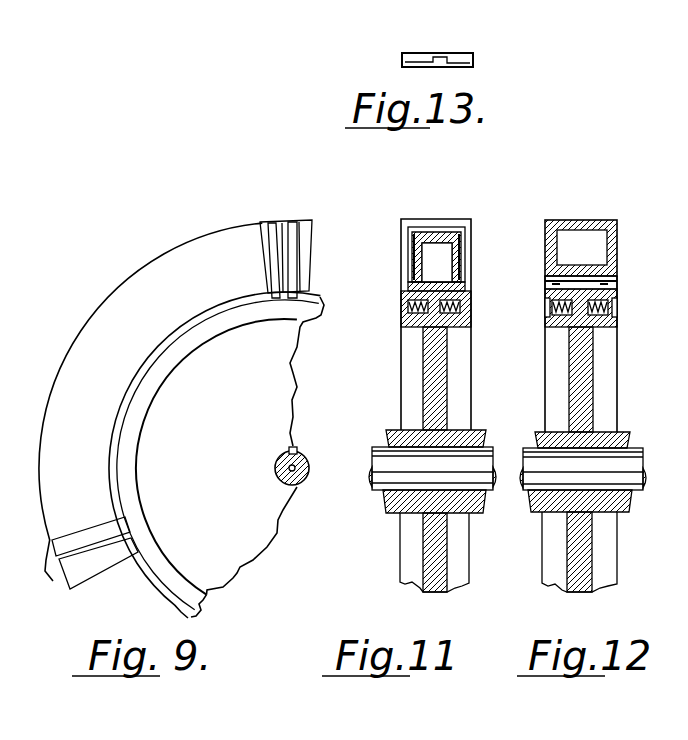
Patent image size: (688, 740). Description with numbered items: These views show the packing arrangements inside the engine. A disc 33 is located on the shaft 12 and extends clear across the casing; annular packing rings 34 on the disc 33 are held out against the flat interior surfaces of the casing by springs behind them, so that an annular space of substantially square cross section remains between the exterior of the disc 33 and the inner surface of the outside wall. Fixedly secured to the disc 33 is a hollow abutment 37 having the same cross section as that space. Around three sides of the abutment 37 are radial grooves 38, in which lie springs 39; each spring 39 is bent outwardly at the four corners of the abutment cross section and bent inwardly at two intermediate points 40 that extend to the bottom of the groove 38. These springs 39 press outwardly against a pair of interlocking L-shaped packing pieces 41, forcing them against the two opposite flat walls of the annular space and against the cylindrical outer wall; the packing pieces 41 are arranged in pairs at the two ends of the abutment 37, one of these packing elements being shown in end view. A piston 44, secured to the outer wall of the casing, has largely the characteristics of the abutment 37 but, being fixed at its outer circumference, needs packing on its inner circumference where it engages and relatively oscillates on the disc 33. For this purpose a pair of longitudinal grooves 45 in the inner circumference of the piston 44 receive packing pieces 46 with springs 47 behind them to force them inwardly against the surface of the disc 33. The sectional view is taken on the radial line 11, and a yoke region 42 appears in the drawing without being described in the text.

In FIG. 9, the radial line 11 is at (287, 348).
In FIG. 9, the shaft 12 is at (310, 482).
In FIG. 11, the shaft 12 is at (373, 492).
In FIG. 12, the shaft 12 is at (628, 497).
In FIG. 9, the disc 33 is at (287, 385).
In FIG. 11, the disc 33 is at (440, 380).
In FIG. 12, the disc 33 is at (582, 370).
In FIG. 9, the annular packing rings 34 is at (176, 352).
In FIG. 9, the abutment 37 is at (161, 263).
In FIG. 11, the abutment 37 is at (468, 283).
In FIG. 11, the radial grooves 38 is at (410, 258).
In FIG. 11, the springs 39 is at (463, 252).
In FIG. 11, the intermediate points 40 is at (435, 230).
In FIG. 9, the interlocking L-shaped packing pieces 41 is at (292, 228).
In FIG. 11, the interlocking L-shaped packing pieces 41 is at (465, 222).
In FIG. 13, the interlocking L-shaped packing pieces 41 is at (418, 55).
In FIG. 11, the yoke 42 is at (412, 320).
In FIG. 12, the piston 44 is at (582, 222).
In FIG. 12, the longitudinal grooves 45 is at (617, 280).
In FIG. 12, the packing pieces 46 is at (557, 288).
In FIG. 12, the springs 47 is at (578, 268).